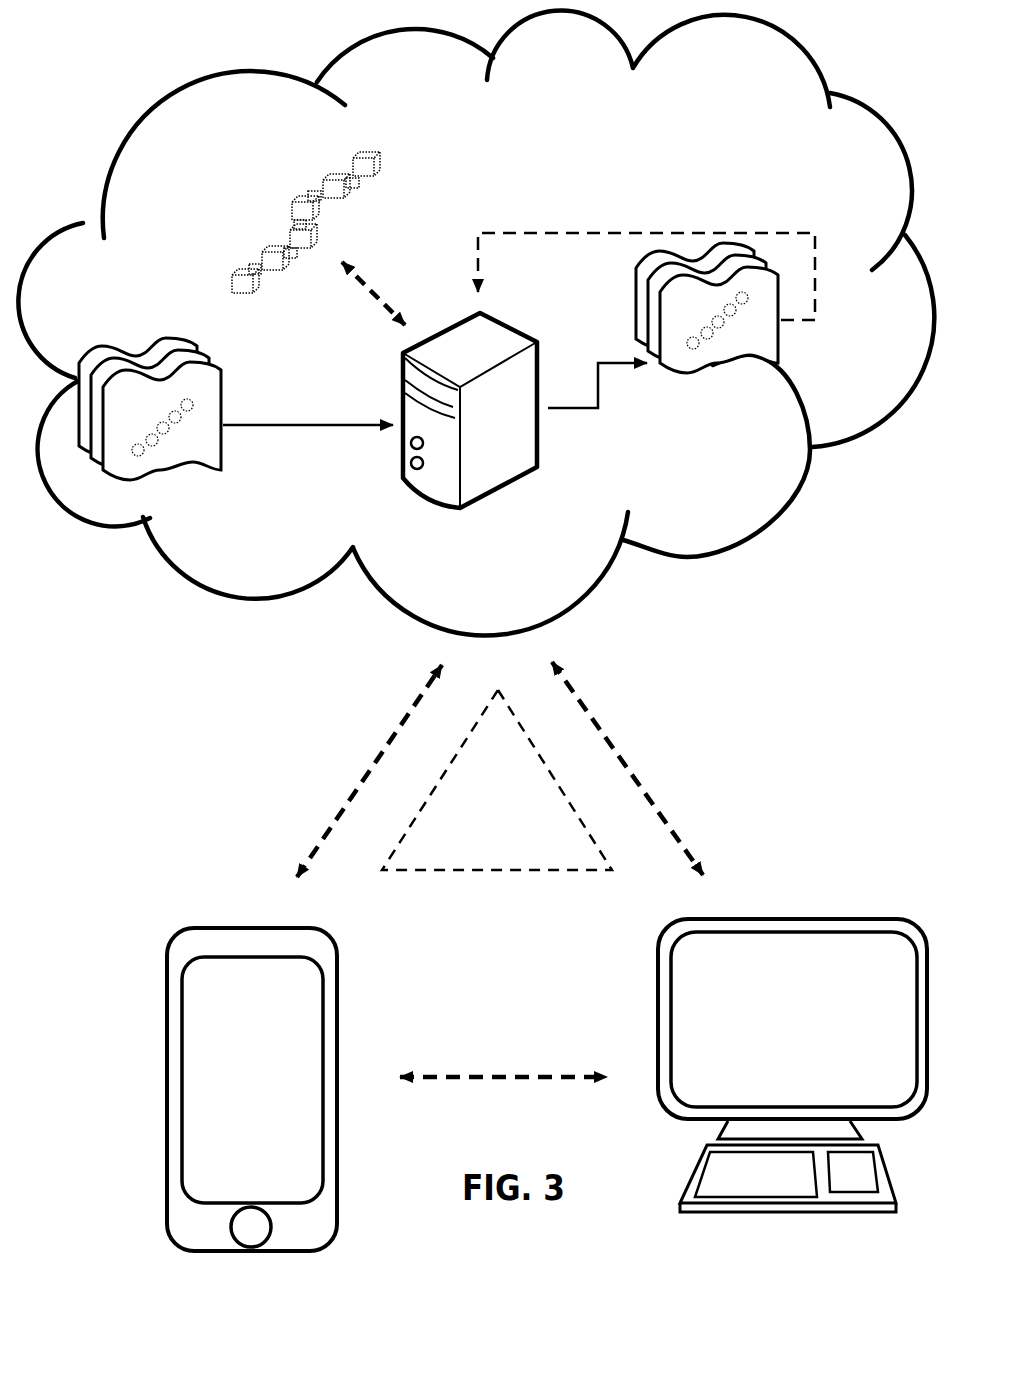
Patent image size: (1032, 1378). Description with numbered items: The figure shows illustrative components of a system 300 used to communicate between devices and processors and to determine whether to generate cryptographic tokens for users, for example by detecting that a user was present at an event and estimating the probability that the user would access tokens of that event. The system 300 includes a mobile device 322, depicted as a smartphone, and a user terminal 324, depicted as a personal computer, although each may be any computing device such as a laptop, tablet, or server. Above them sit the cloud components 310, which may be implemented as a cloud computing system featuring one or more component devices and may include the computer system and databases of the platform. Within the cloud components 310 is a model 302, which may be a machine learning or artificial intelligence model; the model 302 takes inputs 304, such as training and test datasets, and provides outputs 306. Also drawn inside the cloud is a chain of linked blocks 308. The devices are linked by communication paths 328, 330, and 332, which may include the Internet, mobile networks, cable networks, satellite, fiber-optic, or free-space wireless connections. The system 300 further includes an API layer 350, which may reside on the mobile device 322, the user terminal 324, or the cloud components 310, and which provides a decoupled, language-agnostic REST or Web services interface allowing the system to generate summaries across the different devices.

The system 300 is at (512, 22).
The model 302 is at (505, 508).
The inputs 304 is at (148, 352).
The outputs 306 is at (740, 337).
The blockchain 308 is at (396, 170).
The cloud components 310 is at (237, 553).
The mobile device 322 is at (243, 906).
The user terminal 324 is at (785, 915).
The communication path 328 is at (323, 758).
The communication path 330 is at (707, 728).
The communication path 332 is at (492, 1045).
The API layer 350 is at (518, 805).